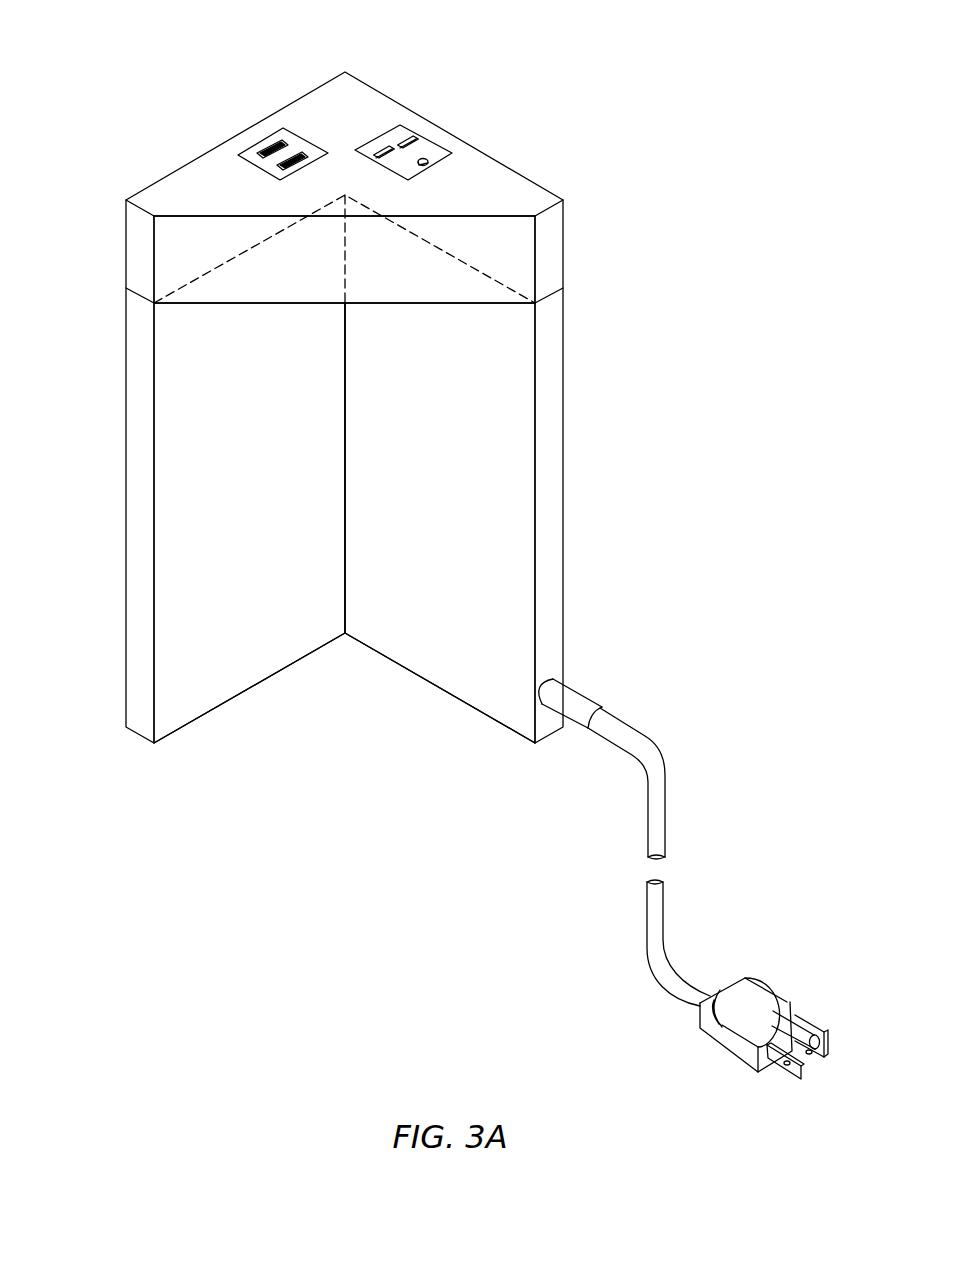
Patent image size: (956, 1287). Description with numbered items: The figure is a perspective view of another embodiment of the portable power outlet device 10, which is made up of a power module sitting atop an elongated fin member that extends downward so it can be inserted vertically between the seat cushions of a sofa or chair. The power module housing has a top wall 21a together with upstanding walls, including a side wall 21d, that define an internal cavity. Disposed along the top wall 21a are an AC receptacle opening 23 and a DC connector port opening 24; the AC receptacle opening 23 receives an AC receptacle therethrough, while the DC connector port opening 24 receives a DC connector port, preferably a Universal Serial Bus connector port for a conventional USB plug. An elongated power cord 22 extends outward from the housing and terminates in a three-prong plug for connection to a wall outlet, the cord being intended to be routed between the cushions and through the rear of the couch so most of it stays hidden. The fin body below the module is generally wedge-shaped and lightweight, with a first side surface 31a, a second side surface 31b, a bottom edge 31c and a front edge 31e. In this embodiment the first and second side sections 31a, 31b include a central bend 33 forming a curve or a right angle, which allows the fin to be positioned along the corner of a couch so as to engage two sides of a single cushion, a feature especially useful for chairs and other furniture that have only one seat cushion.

The portable power outlet device 10 is at (140, 67).
The top wall 21a is at (358, 112).
The side wall 21d is at (510, 244).
The power cord 22 is at (655, 805).
The AC receptacle opening 23 is at (425, 133).
The DC connector port opening 24 is at (270, 140).
The first side surface 31a is at (369, 417).
The second side surface 31b is at (550, 502).
The bottom edge 31c is at (235, 698).
The front edge 31e is at (127, 523).
The central bend 33 is at (345, 520).